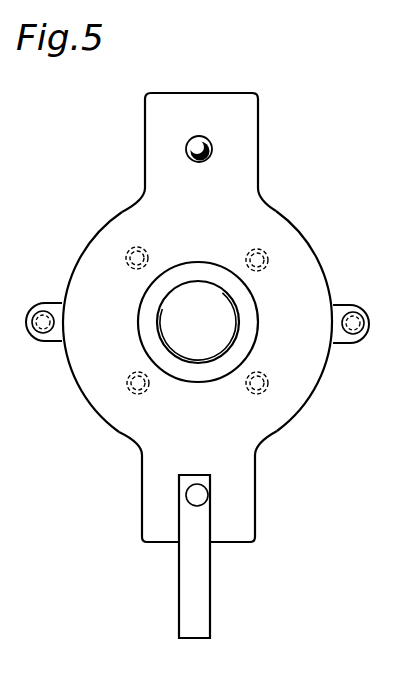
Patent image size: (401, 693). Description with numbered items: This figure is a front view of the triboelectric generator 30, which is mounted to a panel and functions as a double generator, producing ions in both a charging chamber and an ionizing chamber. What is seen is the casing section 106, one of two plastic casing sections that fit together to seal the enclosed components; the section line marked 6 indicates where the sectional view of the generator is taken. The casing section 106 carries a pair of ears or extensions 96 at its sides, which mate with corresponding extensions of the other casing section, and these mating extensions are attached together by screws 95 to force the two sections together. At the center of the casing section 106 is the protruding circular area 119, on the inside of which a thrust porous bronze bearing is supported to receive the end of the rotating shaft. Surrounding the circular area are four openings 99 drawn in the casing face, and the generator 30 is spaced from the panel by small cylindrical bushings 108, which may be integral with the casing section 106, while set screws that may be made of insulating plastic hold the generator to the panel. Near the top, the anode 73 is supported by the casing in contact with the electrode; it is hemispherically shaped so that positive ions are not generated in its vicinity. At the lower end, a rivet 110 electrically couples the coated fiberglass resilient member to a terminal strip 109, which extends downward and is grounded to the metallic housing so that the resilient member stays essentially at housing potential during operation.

The triboelectric generator 30 is at (202, 317).
The anode 73 is at (190, 157).
The screws 95 is at (34, 336).
The ears or extensions 96 is at (55, 303).
The bolt holes 99 is at (128, 266).
The casing section 106 is at (278, 422).
The cylindrical bushings 108 is at (149, 254).
The terminal strip 109 is at (200, 592).
The rivet 110 is at (200, 495).
The protruding circular area 119 is at (218, 323).
The section line 6- 6 is at (183, 73).